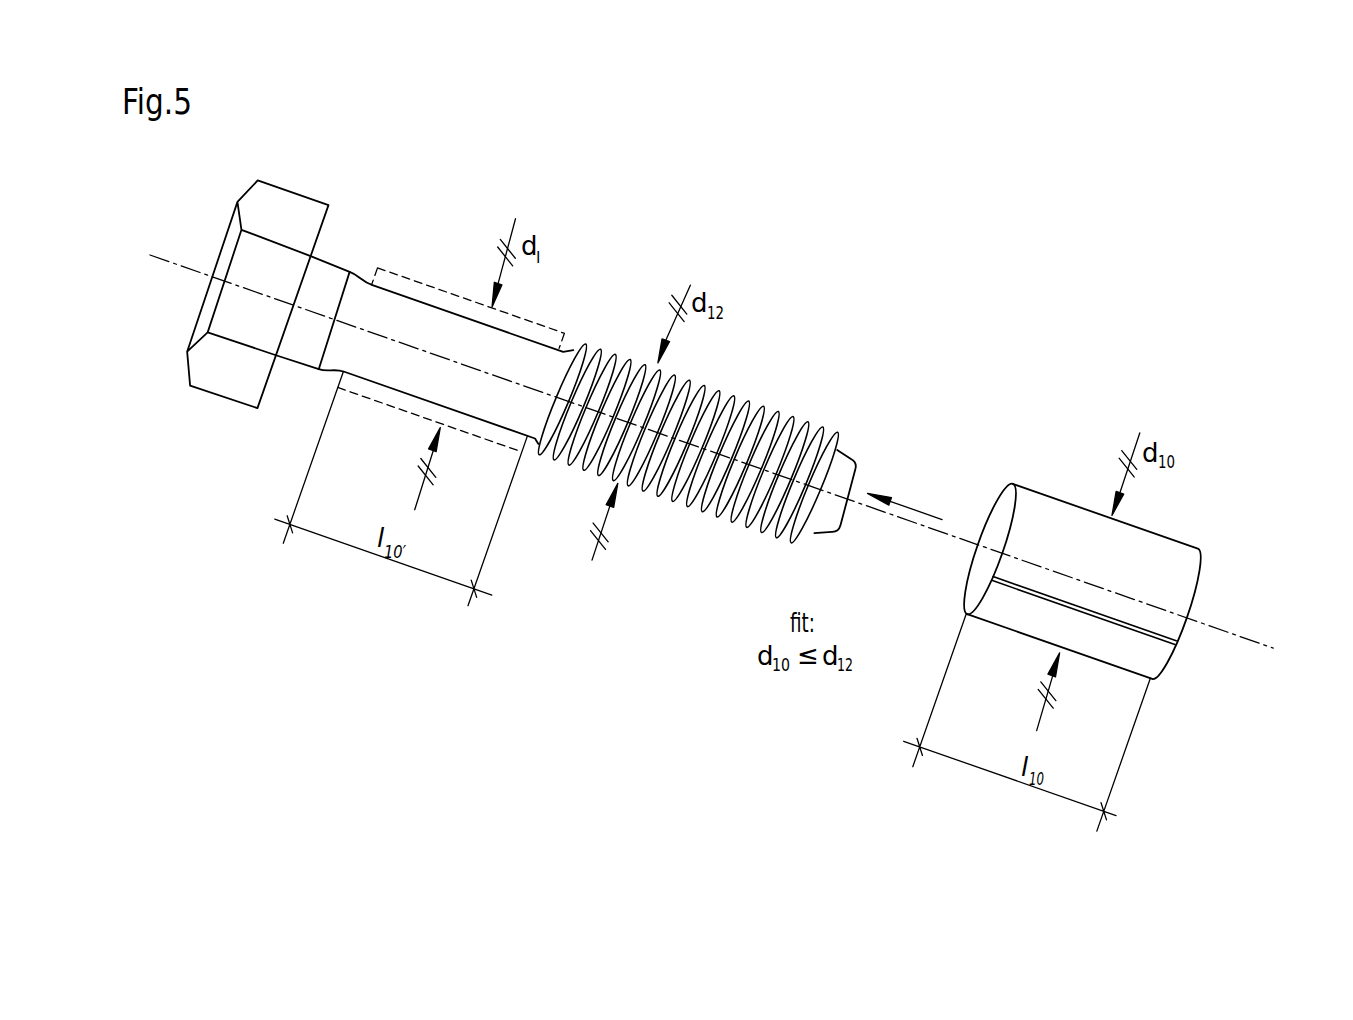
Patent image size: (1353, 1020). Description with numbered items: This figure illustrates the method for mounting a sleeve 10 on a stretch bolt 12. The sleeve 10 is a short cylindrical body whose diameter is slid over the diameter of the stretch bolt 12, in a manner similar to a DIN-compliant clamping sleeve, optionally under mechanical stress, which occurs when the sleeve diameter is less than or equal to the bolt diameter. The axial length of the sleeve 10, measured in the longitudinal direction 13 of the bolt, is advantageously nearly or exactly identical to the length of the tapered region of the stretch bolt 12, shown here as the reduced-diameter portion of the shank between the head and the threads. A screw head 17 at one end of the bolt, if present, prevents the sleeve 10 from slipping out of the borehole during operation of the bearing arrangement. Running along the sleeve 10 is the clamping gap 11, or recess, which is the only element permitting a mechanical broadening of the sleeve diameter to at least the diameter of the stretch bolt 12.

The sleeve 10 is at (1112, 385).
The clamping gap 11 is at (1157, 632).
The stretch bolt 12 is at (492, 161).
The longitudinal direction 13 is at (913, 508).
The screw head 17 is at (290, 220).